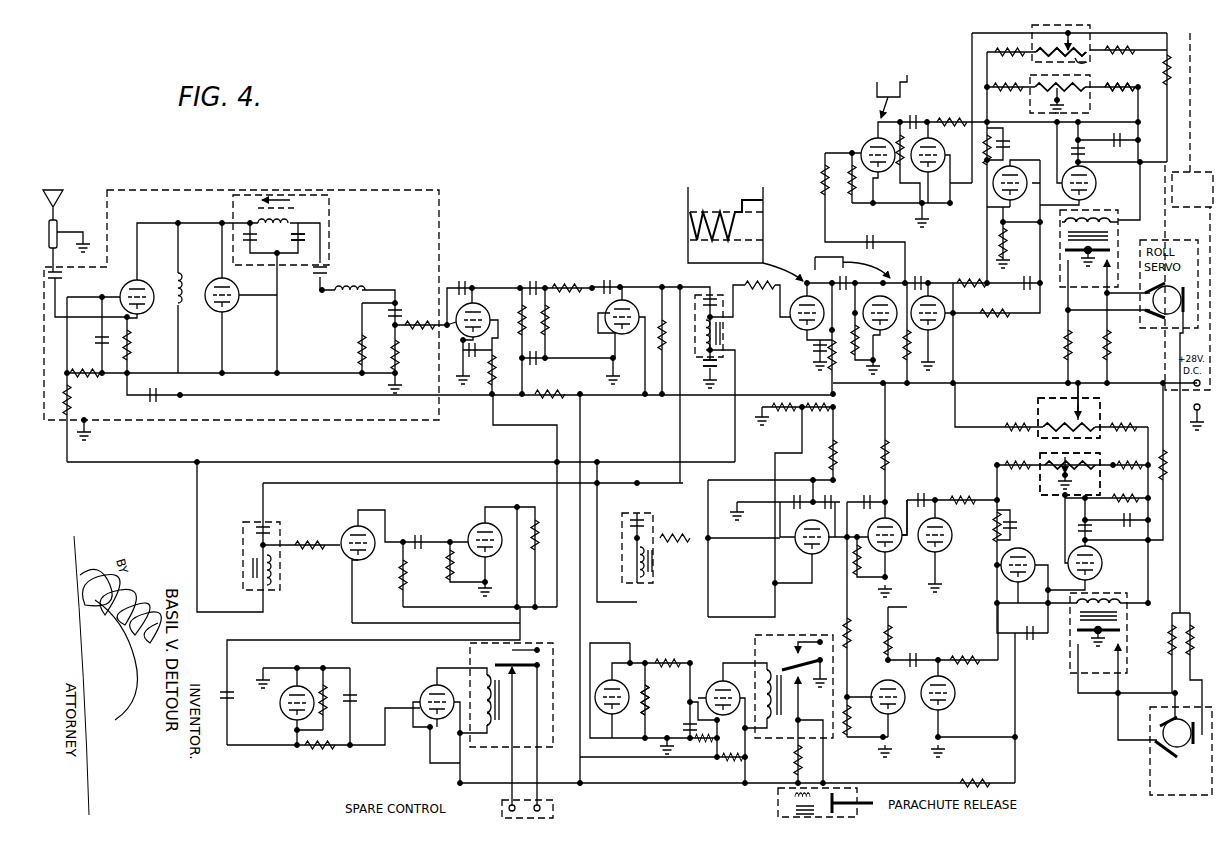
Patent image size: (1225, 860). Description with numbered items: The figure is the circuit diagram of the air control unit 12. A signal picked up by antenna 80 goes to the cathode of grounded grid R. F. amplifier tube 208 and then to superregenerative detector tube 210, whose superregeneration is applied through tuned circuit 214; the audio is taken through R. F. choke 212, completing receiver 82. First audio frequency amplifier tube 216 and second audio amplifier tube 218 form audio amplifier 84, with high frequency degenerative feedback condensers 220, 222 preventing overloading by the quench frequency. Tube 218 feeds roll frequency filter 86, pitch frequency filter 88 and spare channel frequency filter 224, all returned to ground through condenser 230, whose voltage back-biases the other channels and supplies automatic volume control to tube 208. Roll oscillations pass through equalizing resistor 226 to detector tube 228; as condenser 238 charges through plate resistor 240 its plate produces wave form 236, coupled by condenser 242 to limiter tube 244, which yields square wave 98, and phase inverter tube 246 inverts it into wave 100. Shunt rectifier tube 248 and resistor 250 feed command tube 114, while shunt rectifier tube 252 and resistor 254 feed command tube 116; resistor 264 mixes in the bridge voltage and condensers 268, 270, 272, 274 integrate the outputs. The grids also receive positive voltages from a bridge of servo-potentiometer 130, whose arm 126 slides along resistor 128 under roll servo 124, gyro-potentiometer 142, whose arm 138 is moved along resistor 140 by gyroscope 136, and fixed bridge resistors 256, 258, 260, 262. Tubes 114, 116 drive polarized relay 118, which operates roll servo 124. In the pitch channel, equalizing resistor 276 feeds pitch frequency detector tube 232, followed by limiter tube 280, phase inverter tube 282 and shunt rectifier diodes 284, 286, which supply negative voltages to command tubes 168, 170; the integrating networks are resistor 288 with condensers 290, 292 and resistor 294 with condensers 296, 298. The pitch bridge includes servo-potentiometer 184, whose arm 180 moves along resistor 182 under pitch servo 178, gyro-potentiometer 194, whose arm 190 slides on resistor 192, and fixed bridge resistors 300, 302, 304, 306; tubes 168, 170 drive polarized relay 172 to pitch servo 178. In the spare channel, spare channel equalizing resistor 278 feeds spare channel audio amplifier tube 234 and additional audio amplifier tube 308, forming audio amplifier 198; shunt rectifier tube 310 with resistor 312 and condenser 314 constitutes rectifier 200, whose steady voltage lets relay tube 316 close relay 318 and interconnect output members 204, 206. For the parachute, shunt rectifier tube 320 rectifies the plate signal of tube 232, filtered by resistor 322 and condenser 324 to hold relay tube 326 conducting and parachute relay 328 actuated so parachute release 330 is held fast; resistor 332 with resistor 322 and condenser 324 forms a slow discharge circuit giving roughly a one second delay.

The air control unit 12 is at (488, 205).
The antenna 80 is at (58, 188).
The receiver 82 is at (264, 190).
The audio amplifier 84 is at (554, 282).
The roll frequency filter 86 is at (724, 345).
The pitch frequency filter 88 is at (654, 568).
The square wave 98 is at (845, 256).
The inverted wave form 100 is at (892, 85).
The command tube 114 is at (1020, 166).
The command tube 116 is at (1096, 180).
The polarized relay 118 is at (1092, 216).
The roll servo 124 is at (1187, 211).
The arm 126 is at (1052, 88).
The resistor 128 is at (1038, 76).
The servo-potentiometer 130 is at (1092, 80).
The gyroscope 136 is at (1190, 174).
The arm 138 is at (1061, 43).
The resistor 140 is at (1093, 62).
The gyro-potentiometer 142 is at (1030, 41).
The command tube 168 is at (1102, 566).
The command tube 170 is at (1001, 560).
The polarized relay 172 is at (1072, 670).
The pitch servo 178 is at (1150, 774).
The arm 180 is at (1100, 480).
The resistor 182 is at (1046, 458).
The servo-potentiometer 184 is at (1092, 456).
The arm 190 is at (1082, 418).
The resistor 192 is at (1069, 418).
The gyro-potentiometer 194 is at (1033, 410).
The audio amplifier 198 is at (343, 586).
The rectifier 200 is at (276, 752).
The output member 204 is at (516, 810).
The output member 206 is at (541, 806).
The grounded grid R. F. amplifier tube 208 is at (150, 280).
The superregenerative detector tube 210 is at (222, 312).
The R. F. choke 212 is at (350, 286).
The tuned circuit 214 is at (333, 235).
The first audio frequency amplifier tube 216 is at (488, 305).
The second audio amplifier tube 218 is at (628, 300).
The high frequency degenerative feedback condenser 220 is at (466, 282).
The high frequency degenerative feedback condenser 222 is at (607, 280).
The spare channel frequency filter 224 is at (268, 522).
The equalizing resistor 226 is at (755, 288).
The detector tube 228 is at (794, 318).
The condenser 230 is at (710, 372).
The pitch frequency detector tube 232 is at (818, 556).
The spare channel audio amplifier tube 234 is at (344, 553).
The wave form 236 is at (742, 200).
The condenser 238 is at (817, 349).
The plate resistor 240 is at (840, 350).
The condenser 242 is at (846, 280).
The limiter tube 244 is at (881, 324).
The phase inverter tube 246 is at (864, 144).
The shunt rectifier tube 248 is at (936, 330).
The resistor 250 is at (967, 280).
The shunt rectifier tube 252 is at (942, 142).
The resistor 254 is at (932, 116).
The fixed bridge resistor 256 is at (988, 86).
The fixed bridge resistor 258 is at (1140, 84).
The fixed bridge resistor 260 is at (990, 53).
The fixed bridge resistor 262 is at (1135, 50).
The resistor 264 is at (984, 146).
The condenser 268 is at (1027, 290).
The condenser 270 is at (1008, 142).
The condenser 272 is at (1122, 144).
The condenser 274 is at (1085, 150).
The equalizing resistor 276 is at (666, 532).
The spare channel equalizing resistor 278 is at (322, 528).
The limiter tube 280 is at (895, 552).
The phase inverter tube 282 is at (880, 682).
The shunt rectifier diode 284 is at (948, 543).
The shunt rectifier diode 286 is at (956, 694).
The resistor 288 is at (966, 496).
The condenser 290 is at (1080, 528).
The condenser 292 is at (1125, 516).
The resistor 294 is at (964, 655).
The condenser 296 is at (1014, 524).
The condenser 298 is at (1030, 642).
The fixed bridge resistor 300 is at (1130, 458).
The fixed bridge resistor 302 is at (1018, 470).
The fixed bridge resistor 304 is at (1123, 420).
The fixed bridge resistor 306 is at (1008, 424).
The additional audio amplifier tube 308 is at (474, 532).
The shunt rectifier tube 310 is at (280, 706).
The resistor 312 is at (320, 750).
The condenser 314 is at (353, 694).
The relay tube 316 is at (426, 688).
The relay 318 is at (540, 652).
The shunt rectifier tube 320 is at (612, 676).
The resistor 322 is at (672, 658).
The condenser 324 is at (684, 726).
The relay tube 326 is at (716, 678).
The parachute relay 328 is at (782, 636).
The parachute release 330 is at (778, 805).
The resistor 332 is at (648, 696).